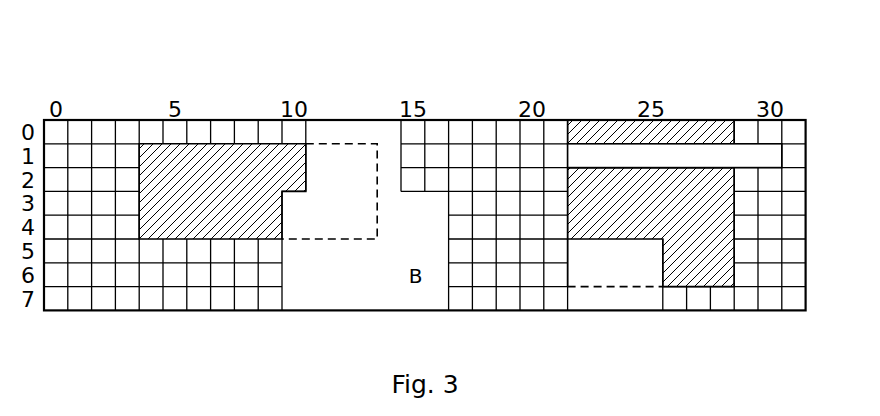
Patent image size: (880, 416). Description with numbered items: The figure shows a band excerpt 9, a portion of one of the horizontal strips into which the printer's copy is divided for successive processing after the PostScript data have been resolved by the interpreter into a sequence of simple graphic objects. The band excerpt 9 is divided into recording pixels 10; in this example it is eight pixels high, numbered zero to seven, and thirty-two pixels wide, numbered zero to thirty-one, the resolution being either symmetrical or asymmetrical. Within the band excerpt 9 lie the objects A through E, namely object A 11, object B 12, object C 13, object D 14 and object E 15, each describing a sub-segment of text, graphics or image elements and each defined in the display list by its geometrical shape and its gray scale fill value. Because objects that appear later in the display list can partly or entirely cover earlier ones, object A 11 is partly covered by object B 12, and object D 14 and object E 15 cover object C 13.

The band excerpt 9 is at (443, 120).
The recording pixels 10 is at (80, 132).
The object A 11 is at (235, 168).
The object B 12 is at (378, 133).
The object C 13 is at (705, 228).
The object D 14 is at (753, 157).
The object E 15 is at (622, 300).